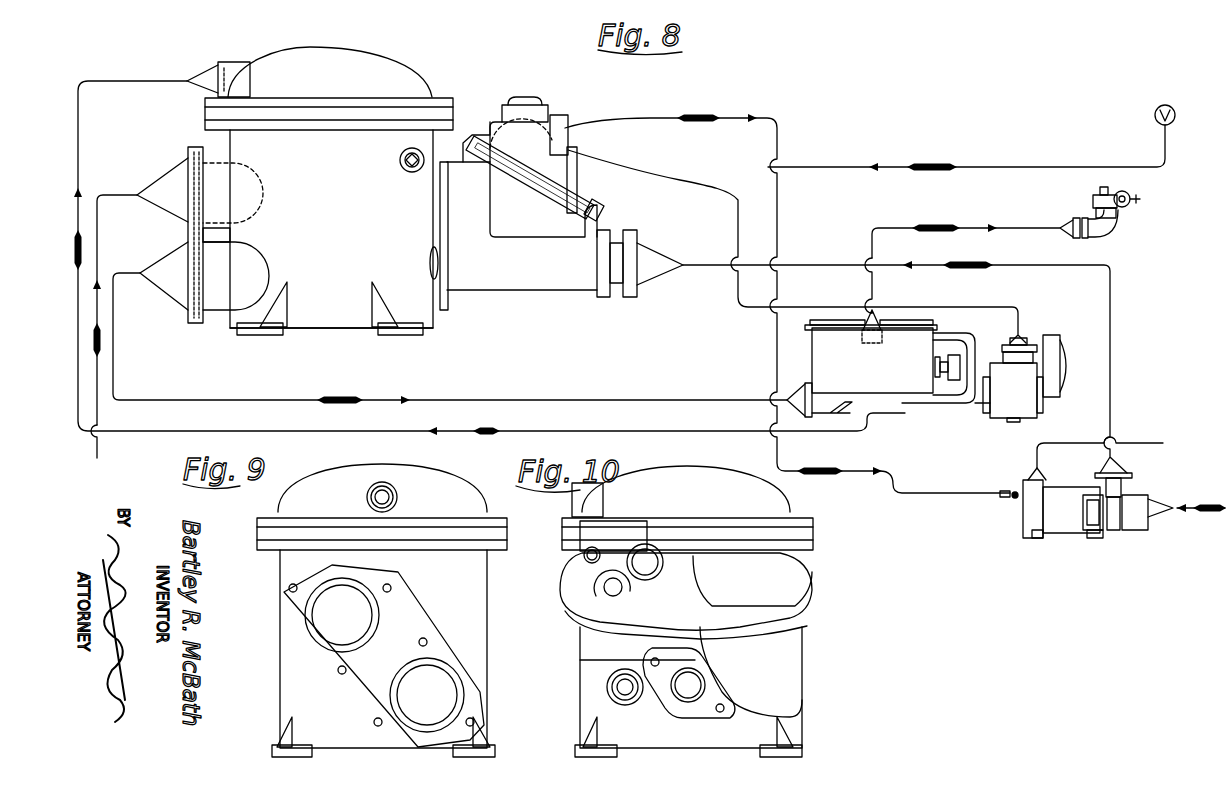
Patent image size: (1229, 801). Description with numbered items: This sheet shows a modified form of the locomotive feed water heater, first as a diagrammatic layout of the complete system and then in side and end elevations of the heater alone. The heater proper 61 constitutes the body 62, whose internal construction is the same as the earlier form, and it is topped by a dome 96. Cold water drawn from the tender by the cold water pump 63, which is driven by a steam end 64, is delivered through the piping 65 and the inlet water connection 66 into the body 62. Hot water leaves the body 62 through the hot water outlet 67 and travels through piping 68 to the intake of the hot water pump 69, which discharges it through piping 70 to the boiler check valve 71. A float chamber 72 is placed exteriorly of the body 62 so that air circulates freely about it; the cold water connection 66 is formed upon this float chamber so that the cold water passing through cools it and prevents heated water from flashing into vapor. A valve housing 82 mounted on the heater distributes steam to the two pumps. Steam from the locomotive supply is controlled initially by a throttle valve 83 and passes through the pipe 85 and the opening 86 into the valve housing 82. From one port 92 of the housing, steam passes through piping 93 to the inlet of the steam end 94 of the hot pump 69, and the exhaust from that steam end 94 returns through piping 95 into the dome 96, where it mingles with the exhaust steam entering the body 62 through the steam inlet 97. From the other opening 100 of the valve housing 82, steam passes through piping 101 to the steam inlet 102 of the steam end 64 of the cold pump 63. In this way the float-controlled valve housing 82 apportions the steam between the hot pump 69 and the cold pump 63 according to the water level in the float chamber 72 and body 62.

In FIG. 8, the heater proper 61 is at (318, 312).
In FIG. 8, the body 62 is at (420, 300).
In FIG. 9, the body 62 is at (292, 566).
In FIG. 8, the cold water pump 63 is at (1111, 502).
In FIG. 8, the steam end 64 is at (1037, 508).
In FIG. 8, the piping 65 is at (810, 264).
In FIG. 8, the inlet water connection 66 is at (534, 270).
In FIG. 10, the inlet water connection 66 is at (684, 690).
In FIG. 8, the hot water outlet 67 is at (219, 300).
In FIG. 9, the hot water outlet 67 is at (432, 690).
In FIG. 8, the piping 68 is at (575, 400).
In FIG. 8, the hot water pump 69 is at (914, 341).
In FIG. 8, the piping 70 is at (973, 227).
In FIG. 8, the boiler check valve 71 is at (1098, 193).
In FIG. 10, the float chamber 72 is at (790, 662).
In FIG. 10, the valve housing 82 is at (603, 535).
In FIG. 8, the throttle valve 83 is at (1150, 116).
In FIG. 8, the pipe 85 is at (997, 166).
In FIG. 10, the opening 86 is at (648, 560).
In FIG. 10, the port 92 is at (620, 588).
In FIG. 8, the piping 93 is at (737, 224).
In FIG. 8, the steam end 94 is at (1023, 398).
In FIG. 8, the piping 95 is at (150, 68).
In FIG. 9, the piping 95 is at (380, 499).
In FIG. 10, the piping 95 is at (573, 503).
In FIG. 8, the dome 96 is at (330, 62).
In FIG. 9, the dome 96 is at (460, 492).
In FIG. 10, the dome 96 is at (700, 478).
In FIG. 8, the steam inlet 97 is at (212, 165).
In FIG. 9, the steam inlet 97 is at (322, 622).
In FIG. 10, the opening 100 is at (590, 562).
In FIG. 8, the piping 101 is at (794, 206).
In FIG. 8, the steam inlet 102 is at (1011, 500).